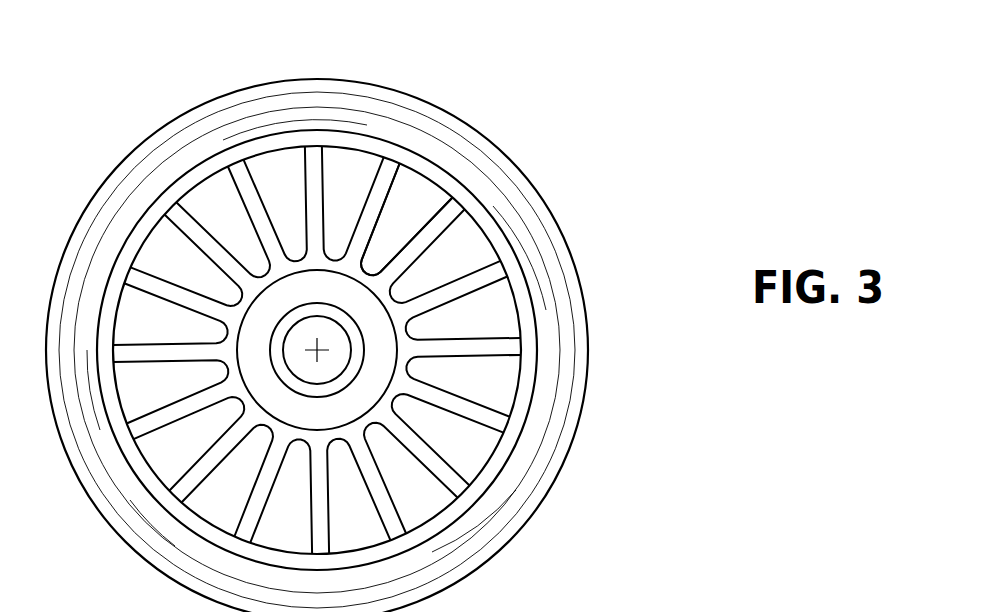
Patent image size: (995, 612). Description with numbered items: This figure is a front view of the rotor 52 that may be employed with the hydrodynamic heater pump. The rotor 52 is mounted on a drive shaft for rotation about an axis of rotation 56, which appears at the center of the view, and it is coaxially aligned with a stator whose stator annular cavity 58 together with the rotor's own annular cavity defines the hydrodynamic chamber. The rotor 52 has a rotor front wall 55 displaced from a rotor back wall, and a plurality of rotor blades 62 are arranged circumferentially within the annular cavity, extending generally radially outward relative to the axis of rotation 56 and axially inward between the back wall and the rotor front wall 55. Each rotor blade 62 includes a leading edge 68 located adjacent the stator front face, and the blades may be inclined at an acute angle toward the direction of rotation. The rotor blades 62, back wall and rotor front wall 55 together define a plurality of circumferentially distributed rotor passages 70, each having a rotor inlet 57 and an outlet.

The rotor 52 is at (587, 300).
The rotor front wall 55 is at (517, 422).
The axis of rotation 56 is at (312, 350).
The rotor inlet 57 is at (480, 377).
The stator annular cavity 58 is at (854, 608).
The rotor blade 62 is at (479, 289).
The leading edge 68 is at (215, 253).
The rotor passage 70 is at (403, 223).